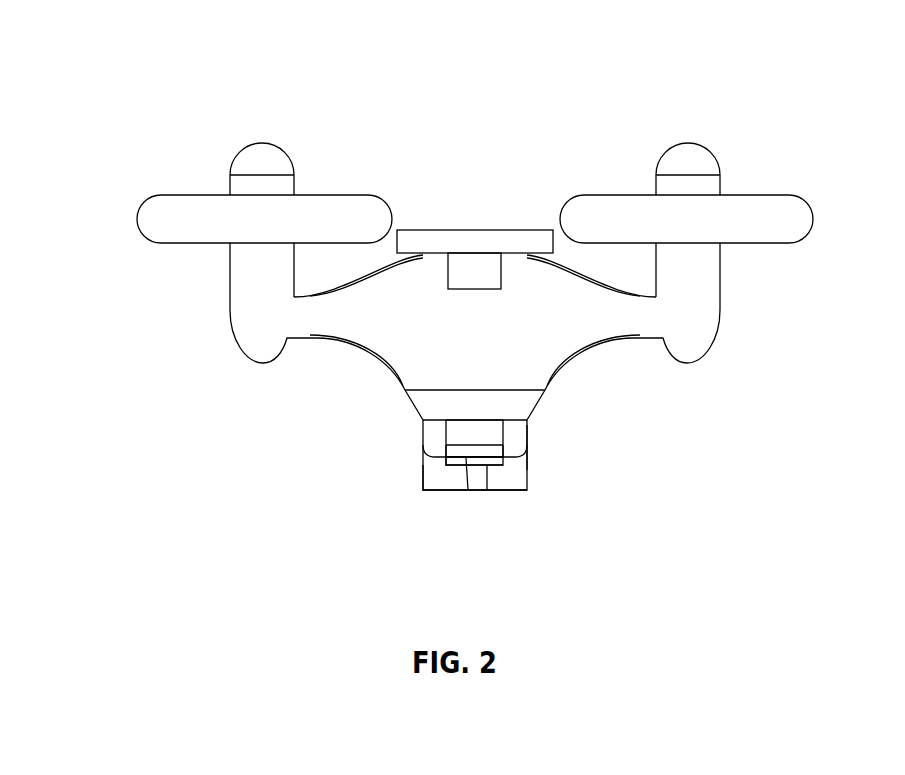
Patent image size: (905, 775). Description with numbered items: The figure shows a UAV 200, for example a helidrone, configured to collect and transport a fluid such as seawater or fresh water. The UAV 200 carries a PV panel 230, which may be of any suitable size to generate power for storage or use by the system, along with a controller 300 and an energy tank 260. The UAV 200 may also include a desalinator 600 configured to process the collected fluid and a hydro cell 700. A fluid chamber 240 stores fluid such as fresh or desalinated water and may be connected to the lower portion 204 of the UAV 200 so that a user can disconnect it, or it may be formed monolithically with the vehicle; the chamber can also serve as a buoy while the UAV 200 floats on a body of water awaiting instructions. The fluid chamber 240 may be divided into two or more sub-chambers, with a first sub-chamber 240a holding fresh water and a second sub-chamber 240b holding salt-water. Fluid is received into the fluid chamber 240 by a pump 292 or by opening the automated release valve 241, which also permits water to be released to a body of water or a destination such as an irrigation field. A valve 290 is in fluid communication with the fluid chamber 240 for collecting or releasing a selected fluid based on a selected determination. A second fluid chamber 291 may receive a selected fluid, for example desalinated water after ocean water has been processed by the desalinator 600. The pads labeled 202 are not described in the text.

The UAV 200 is at (168, 42).
The pad 202 is at (128, 208).
The lower portion 204 is at (371, 379).
The PV panel 230 is at (438, 228).
The controller 300 is at (478, 277).
The energy tank 260 is at (528, 408).
The hydro cell 700 is at (420, 427).
The desalinator 600 is at (495, 437).
The pump 292 is at (532, 442).
The second fluid chamber 291 is at (527, 485).
The valve 290 is at (430, 490).
The fluid chamber 240 is at (494, 463).
The first sub-chamber 240a is at (467, 460).
The second sub-chamber 240b is at (477, 460).
The automated release valve 241 is at (466, 490).